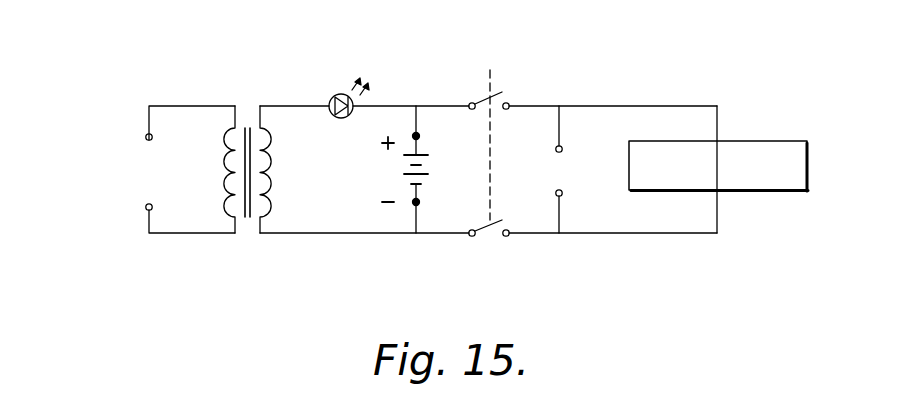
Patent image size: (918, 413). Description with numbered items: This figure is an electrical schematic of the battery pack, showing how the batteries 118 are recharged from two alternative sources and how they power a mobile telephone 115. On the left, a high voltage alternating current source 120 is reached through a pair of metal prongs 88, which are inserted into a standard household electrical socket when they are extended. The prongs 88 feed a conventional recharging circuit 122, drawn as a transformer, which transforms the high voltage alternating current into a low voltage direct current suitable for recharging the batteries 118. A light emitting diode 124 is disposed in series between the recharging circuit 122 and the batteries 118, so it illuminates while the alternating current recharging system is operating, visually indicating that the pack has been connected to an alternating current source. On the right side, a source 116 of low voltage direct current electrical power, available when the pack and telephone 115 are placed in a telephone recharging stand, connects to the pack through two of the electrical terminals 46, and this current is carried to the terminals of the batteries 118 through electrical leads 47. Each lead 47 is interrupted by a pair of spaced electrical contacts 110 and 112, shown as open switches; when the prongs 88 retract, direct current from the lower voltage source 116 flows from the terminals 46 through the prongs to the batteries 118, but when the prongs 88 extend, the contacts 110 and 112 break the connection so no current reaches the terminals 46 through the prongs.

The high voltage alternating current source 120 is at (119, 157).
The metal prongs 88 is at (145, 137).
The recharging circuit 122 is at (245, 103).
The light emitting diode 124 is at (336, 94).
The batteries 118 is at (378, 175).
The electrical contacts 112 is at (470, 103).
The electrical contacts 110 is at (507, 103).
The electrical leads 47 is at (572, 105).
The electrical terminals 46 is at (555, 149).
The source of low voltage direct current electrical power 116 is at (568, 167).
The mobile telephone 115 is at (770, 140).